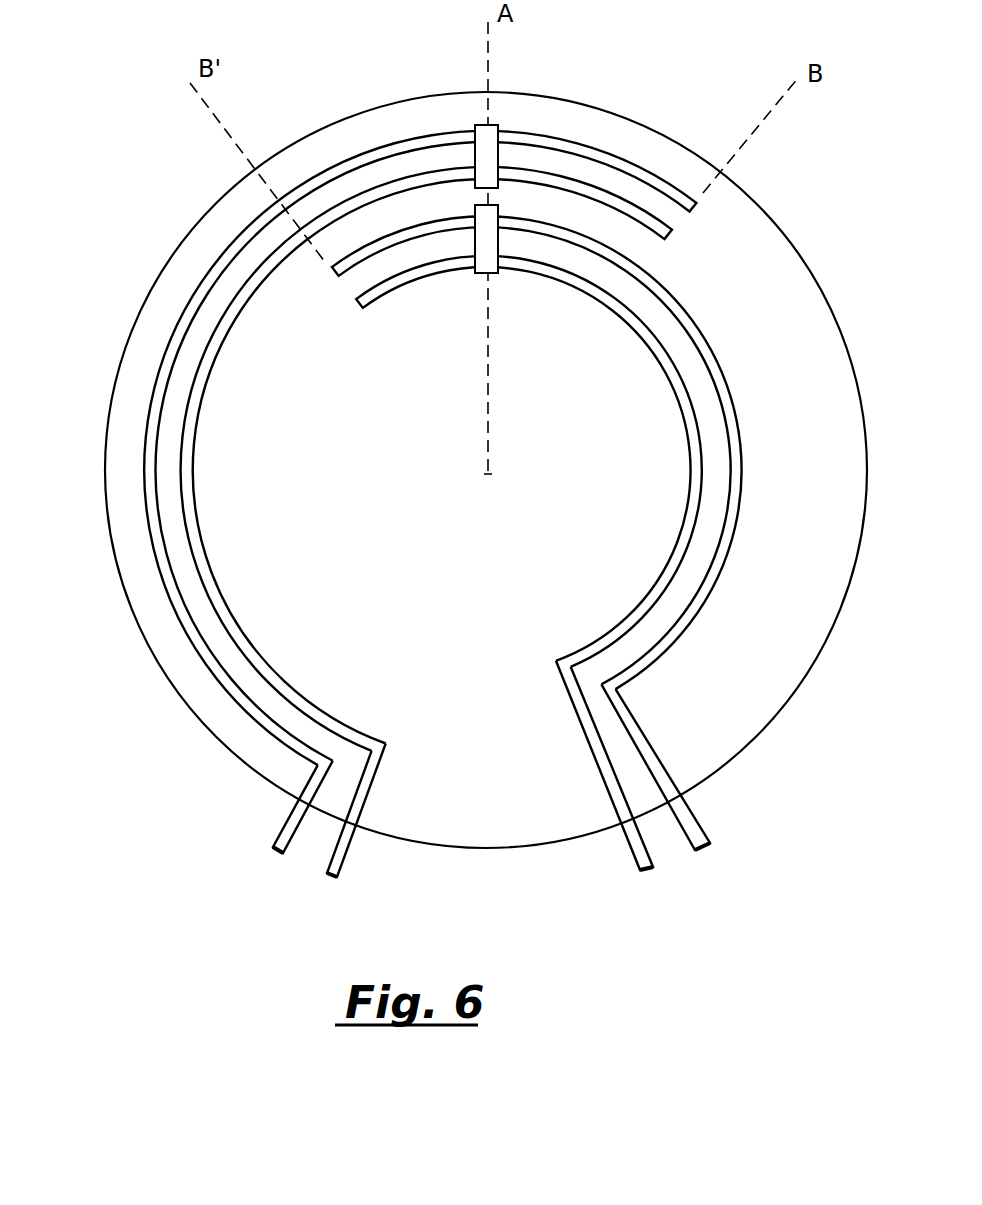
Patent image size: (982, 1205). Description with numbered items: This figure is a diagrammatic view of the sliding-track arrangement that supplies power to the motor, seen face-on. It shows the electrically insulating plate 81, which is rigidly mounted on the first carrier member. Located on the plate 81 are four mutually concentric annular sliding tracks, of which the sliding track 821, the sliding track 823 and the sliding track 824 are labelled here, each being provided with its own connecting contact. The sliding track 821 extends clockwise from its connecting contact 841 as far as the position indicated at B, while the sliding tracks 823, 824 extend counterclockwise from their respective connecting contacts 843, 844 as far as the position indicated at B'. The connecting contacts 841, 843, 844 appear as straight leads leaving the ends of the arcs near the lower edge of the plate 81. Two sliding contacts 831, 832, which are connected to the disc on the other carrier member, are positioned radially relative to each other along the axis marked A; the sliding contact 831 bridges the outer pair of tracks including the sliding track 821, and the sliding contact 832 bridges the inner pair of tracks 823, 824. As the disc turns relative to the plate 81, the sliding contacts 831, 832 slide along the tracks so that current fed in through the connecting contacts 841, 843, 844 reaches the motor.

The electrically insulating plate 81 is at (805, 258).
The sliding track 821 is at (178, 479).
The sliding track 823 is at (733, 394).
The sliding track 824 is at (697, 508).
The sliding contact 831 is at (478, 125).
The sliding contact 832 is at (503, 203).
The connecting contact 841 is at (326, 873).
The connecting contact 843 is at (640, 870).
The connecting contact 844 is at (707, 847).